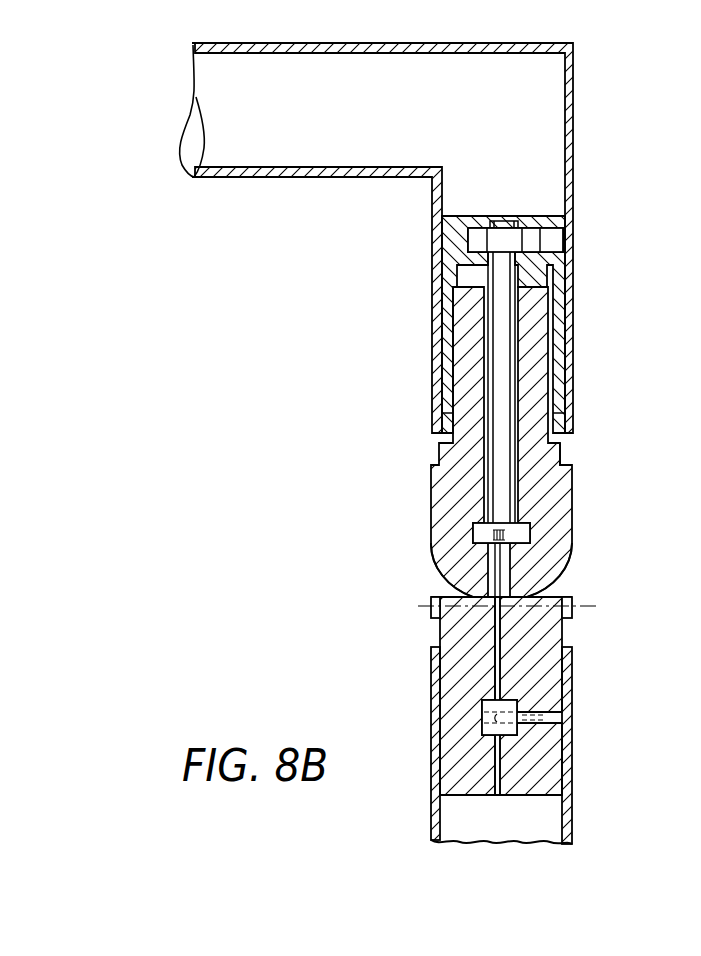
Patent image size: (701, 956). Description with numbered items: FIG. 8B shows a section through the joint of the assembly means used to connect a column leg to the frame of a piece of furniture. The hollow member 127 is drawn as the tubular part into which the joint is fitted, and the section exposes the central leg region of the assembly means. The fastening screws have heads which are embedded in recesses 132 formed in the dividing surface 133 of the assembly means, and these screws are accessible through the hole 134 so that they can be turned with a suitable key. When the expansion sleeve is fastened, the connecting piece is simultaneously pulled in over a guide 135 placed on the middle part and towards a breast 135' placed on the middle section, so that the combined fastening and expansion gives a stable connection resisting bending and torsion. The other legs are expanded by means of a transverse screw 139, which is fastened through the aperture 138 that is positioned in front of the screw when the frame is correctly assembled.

The tubular housing 127 is at (253, 177).
The recess 132 is at (470, 536).
The dividing surface 133 is at (490, 657).
The hole 134 is at (472, 583).
The guide 135 is at (537, 442).
The breast 135' is at (603, 462).
The aperture 138 is at (567, 762).
The transverse screw 139 is at (535, 721).